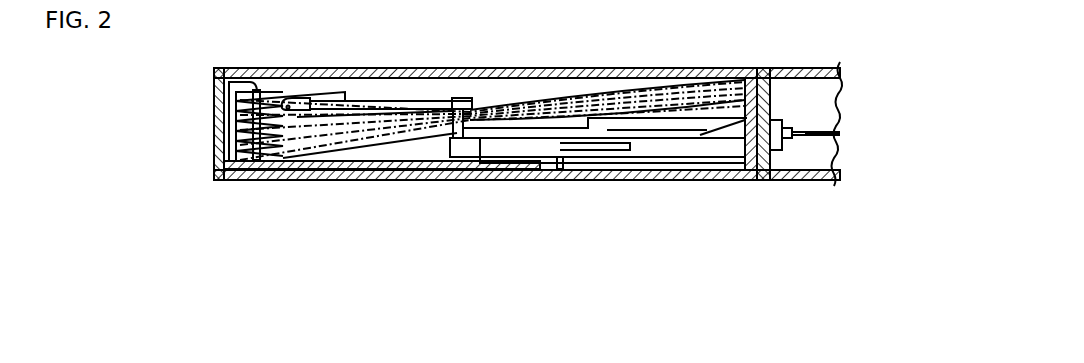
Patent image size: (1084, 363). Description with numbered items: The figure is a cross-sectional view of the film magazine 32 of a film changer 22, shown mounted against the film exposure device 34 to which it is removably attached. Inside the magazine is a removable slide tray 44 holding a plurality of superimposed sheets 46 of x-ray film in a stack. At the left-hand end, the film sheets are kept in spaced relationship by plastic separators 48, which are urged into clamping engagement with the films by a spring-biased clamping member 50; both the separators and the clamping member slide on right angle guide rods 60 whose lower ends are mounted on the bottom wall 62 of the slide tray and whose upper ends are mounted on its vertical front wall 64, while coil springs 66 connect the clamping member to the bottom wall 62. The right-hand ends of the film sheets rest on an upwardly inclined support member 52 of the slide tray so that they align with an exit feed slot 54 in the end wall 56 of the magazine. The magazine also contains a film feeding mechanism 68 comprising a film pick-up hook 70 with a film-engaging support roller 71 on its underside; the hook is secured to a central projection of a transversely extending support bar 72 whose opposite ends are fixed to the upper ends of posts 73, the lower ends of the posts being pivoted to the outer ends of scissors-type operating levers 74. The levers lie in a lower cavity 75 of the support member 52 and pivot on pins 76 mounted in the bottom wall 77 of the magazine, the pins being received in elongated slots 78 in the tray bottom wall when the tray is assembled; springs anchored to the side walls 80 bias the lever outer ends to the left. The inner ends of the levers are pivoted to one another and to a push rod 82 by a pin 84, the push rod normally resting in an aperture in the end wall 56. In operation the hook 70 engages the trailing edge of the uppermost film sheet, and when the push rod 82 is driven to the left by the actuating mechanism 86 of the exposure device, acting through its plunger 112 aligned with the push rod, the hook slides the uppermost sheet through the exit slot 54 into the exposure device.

The film changer 22 is at (656, 64).
The film magazine 32 is at (392, 55).
The film exposure device 34 is at (807, 60).
The slide tray 44 is at (210, 92).
The sheets of x-ray film 46 is at (405, 100).
The plastic separators 48 is at (264, 160).
The spring-biased clamping member 50 is at (263, 88).
The upwardly inclined support member 52 is at (396, 150).
The exit feed slot 54 is at (742, 90).
The end wall 56 is at (741, 150).
The right angle guide rods 60 is at (233, 68).
The bottom wall of the slide tray 62 is at (376, 169).
The vertical front wall 64 is at (228, 130).
The coil springs 66 is at (226, 150).
The film feeding mechanism 68 is at (637, 181).
The film pick-up hook 70 is at (310, 97).
The film-engaging support roller 71 is at (292, 98).
The support bar 72 is at (464, 97).
The posts 73 is at (466, 112).
The scissors-type operating levers 74 is at (477, 157).
The lower cavity 75 is at (604, 118).
The pins 76 is at (558, 169).
The bottom wall of the film magazine 77 is at (335, 180).
The elongated slots 78 is at (587, 165).
The side walls 80 is at (356, 100).
The push rod 82 is at (740, 118).
The pin 84 is at (640, 148).
The actuating mechanism 86 is at (828, 139).
The plunger 112 is at (790, 140).